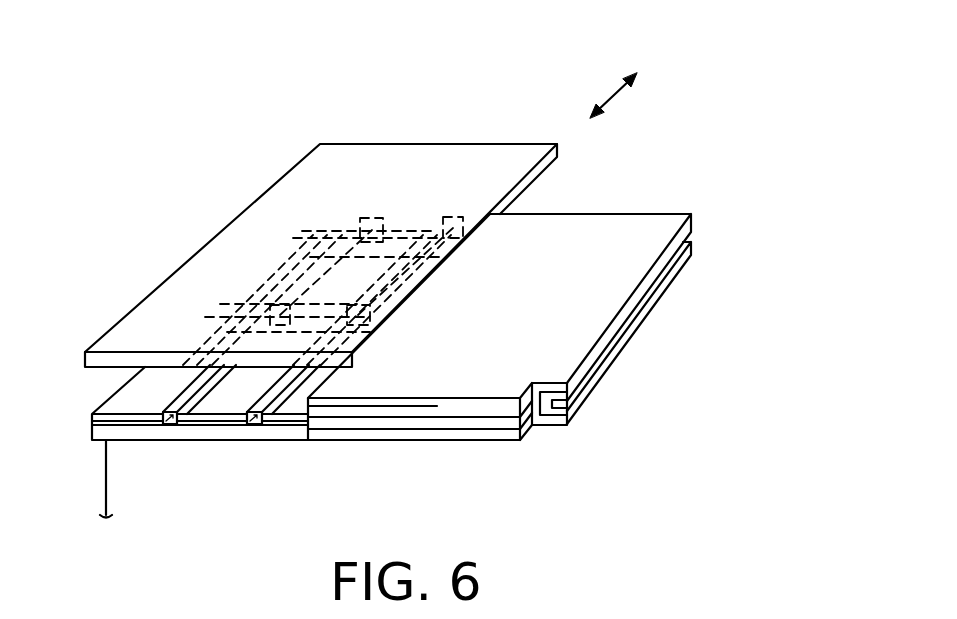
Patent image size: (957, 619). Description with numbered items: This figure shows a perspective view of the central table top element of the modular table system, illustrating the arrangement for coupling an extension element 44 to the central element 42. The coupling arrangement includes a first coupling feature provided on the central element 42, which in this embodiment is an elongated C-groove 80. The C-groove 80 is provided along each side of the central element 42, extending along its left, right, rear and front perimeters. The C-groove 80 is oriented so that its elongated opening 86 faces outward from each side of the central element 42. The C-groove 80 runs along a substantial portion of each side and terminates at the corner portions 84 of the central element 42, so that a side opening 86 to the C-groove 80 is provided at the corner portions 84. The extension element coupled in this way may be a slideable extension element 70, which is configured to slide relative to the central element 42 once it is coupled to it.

The central element 42 is at (597, 228).
The extension element 44 is at (321, 193).
The slideable extension element 70 is at (443, 175).
The elongated C-groove 80 is at (683, 215).
The corner portion 84 is at (538, 428).
The elongated opening 86 is at (556, 403).